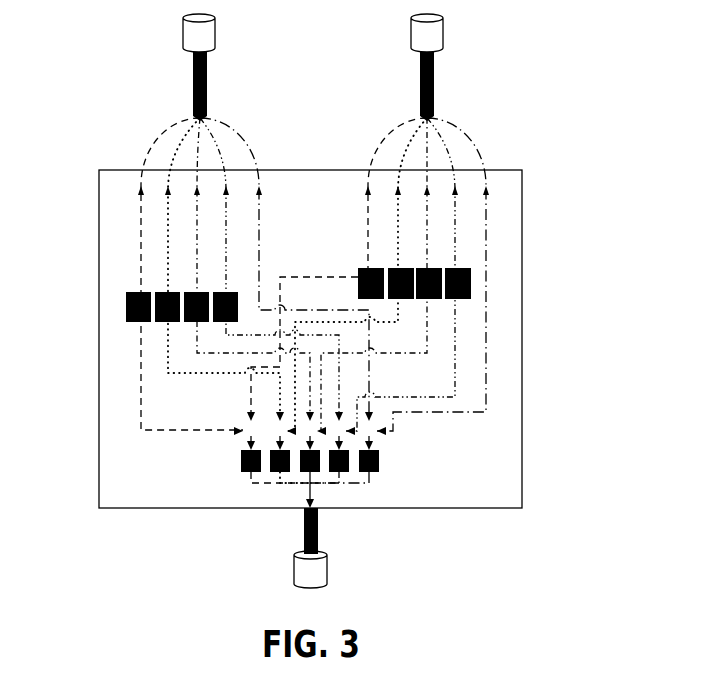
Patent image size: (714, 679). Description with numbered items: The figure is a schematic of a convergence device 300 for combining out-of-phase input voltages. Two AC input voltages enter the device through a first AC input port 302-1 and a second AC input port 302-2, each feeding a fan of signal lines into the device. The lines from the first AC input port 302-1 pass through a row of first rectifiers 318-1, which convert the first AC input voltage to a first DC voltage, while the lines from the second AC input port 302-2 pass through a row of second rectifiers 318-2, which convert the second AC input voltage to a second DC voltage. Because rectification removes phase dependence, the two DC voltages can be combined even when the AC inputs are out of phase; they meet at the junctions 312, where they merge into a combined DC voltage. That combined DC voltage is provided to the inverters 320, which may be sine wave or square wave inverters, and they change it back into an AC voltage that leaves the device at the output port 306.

The convergence device 300 is at (604, 156).
The first AC input port 302-1 is at (132, 162).
The second AC input port 302-2 is at (496, 161).
The output port 306 is at (318, 512).
The junctions 312 is at (228, 448).
The first rectifiers 318-1 is at (126, 310).
The second rectifiers 318-2 is at (471, 282).
The inverters 320 is at (380, 461).